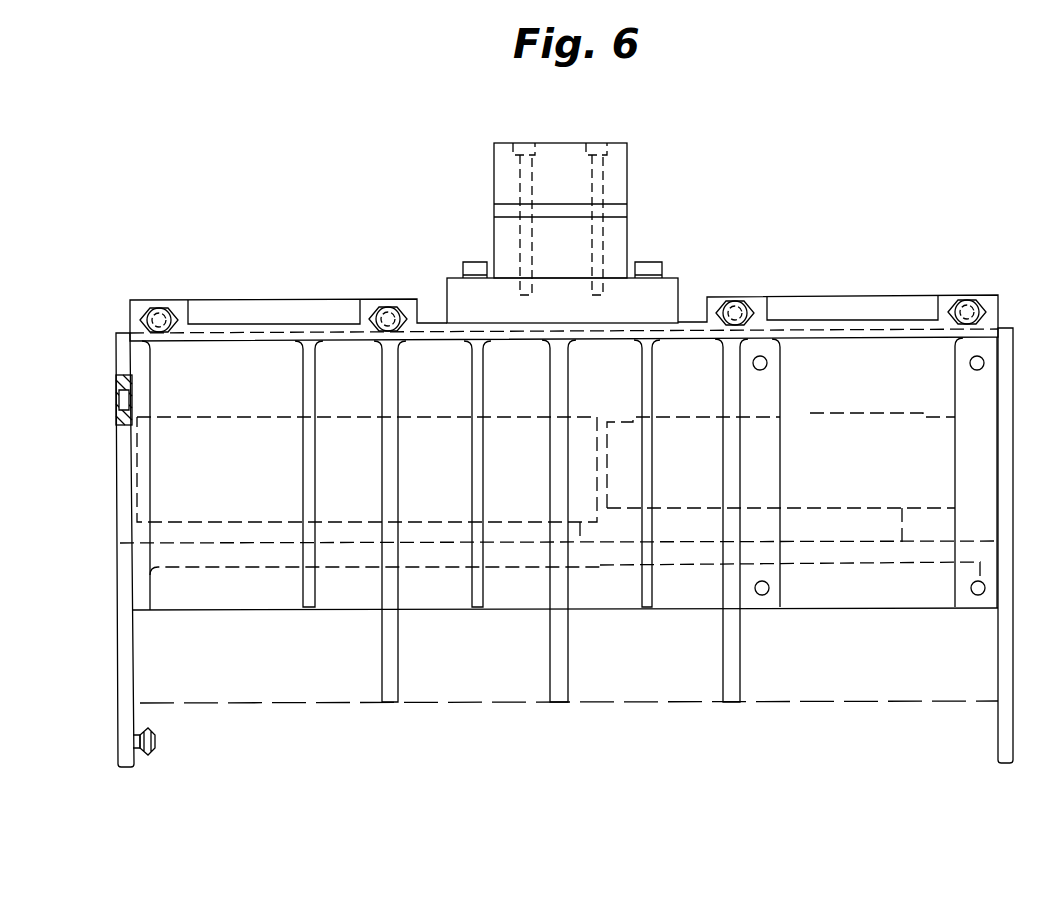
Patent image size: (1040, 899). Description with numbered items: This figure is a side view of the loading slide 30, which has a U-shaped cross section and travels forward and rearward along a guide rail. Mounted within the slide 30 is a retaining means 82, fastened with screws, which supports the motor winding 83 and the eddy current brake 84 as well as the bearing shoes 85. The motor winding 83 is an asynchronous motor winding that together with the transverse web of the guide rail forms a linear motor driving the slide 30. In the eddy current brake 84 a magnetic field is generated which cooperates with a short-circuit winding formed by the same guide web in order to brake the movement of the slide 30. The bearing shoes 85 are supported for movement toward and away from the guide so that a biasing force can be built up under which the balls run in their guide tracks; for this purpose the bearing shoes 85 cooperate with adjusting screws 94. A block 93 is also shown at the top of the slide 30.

The clamping block 93 is at (628, 167).
The bearing shoe 85 is at (288, 308).
The adjusting screw 94 is at (385, 307).
The loading slide 30 is at (914, 288).
The eddy current brake 84 is at (360, 485).
The motor winding 83 is at (851, 479).
The retaining means 82 is at (895, 570).